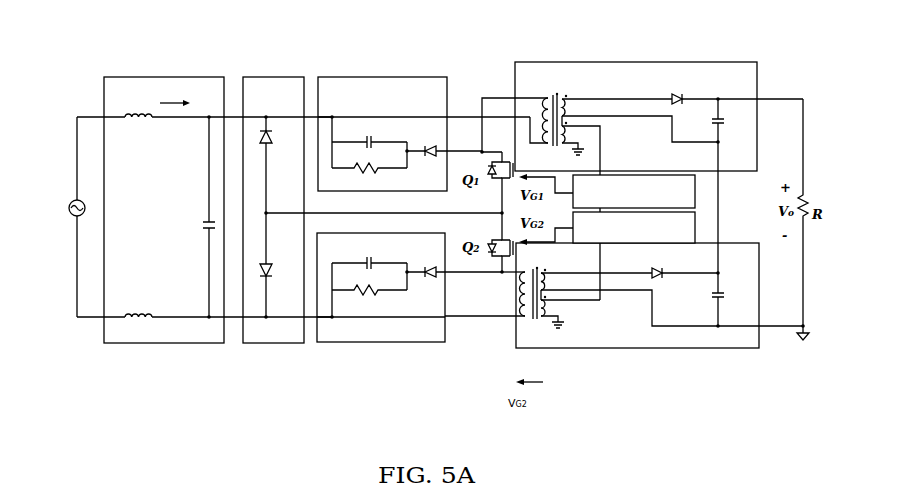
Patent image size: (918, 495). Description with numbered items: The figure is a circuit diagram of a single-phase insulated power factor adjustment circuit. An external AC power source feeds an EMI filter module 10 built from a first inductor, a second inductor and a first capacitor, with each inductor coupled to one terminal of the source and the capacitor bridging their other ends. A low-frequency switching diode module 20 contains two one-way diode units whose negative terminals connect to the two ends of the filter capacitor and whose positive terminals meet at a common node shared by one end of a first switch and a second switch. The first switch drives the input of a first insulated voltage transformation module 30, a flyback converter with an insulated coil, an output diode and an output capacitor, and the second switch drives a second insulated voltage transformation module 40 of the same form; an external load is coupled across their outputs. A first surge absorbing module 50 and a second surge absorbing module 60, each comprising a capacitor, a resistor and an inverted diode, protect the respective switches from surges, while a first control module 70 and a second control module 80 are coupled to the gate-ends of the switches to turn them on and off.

The EMI filter module 10 is at (173, 343).
The low-frequency switching diode module 20 is at (283, 343).
The first insulated voltage transformation module 30 is at (630, 62).
The second insulated voltage transformation module 40 is at (708, 348).
The first surge absorbing module 50 is at (382, 77).
The second surge absorbing module 60 is at (385, 343).
The first control module 70 is at (695, 193).
The second control module 80 is at (695, 226).